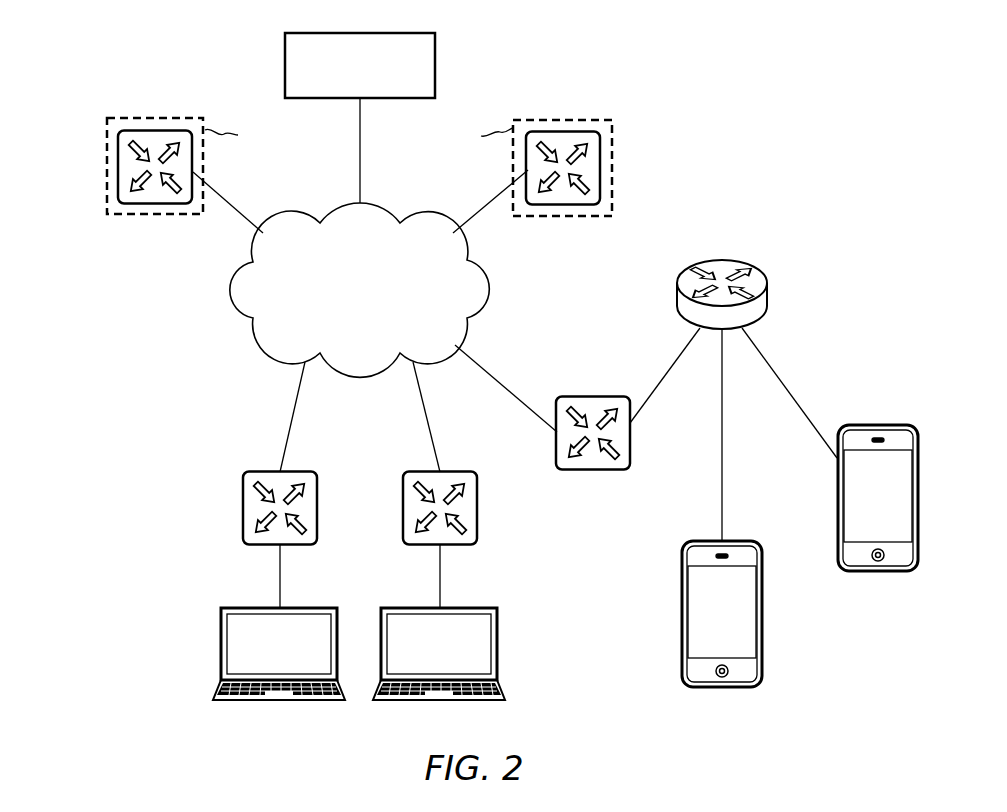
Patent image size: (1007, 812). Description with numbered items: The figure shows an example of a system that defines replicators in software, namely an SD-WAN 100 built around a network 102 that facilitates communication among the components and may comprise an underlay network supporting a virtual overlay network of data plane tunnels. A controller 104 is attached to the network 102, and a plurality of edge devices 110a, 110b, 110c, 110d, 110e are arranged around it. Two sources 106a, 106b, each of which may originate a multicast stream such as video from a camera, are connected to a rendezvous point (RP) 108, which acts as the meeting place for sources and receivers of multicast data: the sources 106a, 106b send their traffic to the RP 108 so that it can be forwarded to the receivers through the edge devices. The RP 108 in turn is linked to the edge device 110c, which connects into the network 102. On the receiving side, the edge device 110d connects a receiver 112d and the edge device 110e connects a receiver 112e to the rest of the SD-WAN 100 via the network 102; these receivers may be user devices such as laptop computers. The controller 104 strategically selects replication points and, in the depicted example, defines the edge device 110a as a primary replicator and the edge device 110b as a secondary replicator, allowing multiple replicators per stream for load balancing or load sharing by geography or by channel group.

The SD-WAN 100 is at (176, 50).
The network 102 is at (360, 290).
The controller 104 is at (360, 65).
The source 106a is at (682, 609).
The source 106b is at (838, 498).
The rendezvous point (RP) 108 is at (768, 268).
The edge device 110a is at (107, 150).
The edge device 110b is at (612, 152).
The edge device 110c is at (631, 448).
The edge device 110d is at (243, 504).
The edge device 110e is at (478, 504).
The receiver 112d is at (221, 637).
The receiver 112e is at (498, 637).